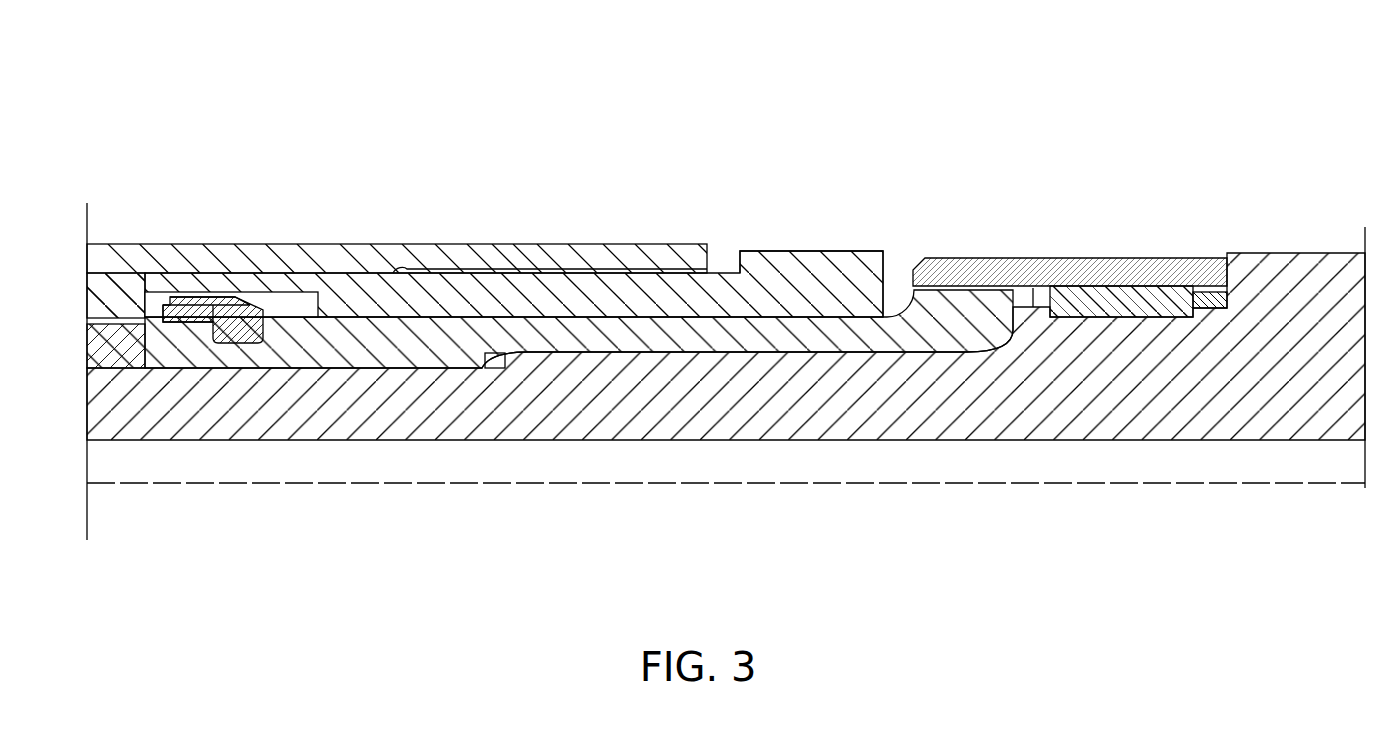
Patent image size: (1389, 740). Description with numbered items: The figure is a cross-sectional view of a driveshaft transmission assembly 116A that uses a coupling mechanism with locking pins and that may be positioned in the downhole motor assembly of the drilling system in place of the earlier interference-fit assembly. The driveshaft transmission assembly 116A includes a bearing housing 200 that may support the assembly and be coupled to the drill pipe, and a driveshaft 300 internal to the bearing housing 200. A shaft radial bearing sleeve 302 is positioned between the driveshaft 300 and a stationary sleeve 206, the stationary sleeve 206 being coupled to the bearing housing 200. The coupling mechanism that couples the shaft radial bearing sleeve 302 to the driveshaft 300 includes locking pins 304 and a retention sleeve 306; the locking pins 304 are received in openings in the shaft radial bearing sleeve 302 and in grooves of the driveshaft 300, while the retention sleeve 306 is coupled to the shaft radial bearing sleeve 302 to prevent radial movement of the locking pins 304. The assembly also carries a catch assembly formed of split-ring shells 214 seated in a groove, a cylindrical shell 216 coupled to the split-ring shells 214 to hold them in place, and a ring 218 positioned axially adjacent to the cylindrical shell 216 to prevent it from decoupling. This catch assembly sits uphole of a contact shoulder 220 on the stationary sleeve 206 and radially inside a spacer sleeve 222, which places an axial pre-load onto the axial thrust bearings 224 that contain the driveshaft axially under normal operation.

The driveshaft transmission assembly 116A is at (127, 105).
The bearing housing 200 is at (222, 258).
The stationary sleeve 206 is at (782, 273).
The split-ring shells 214 is at (257, 330).
The cylindrical shell 216 is at (222, 298).
The ring 218 is at (160, 313).
The contact shoulder 220 is at (318, 274).
The spacer sleeve 222 is at (180, 283).
The axial thrust bearings 224 is at (93, 291).
The driveshaft 300 is at (1000, 418).
The shaft radial bearing sleeve 302 is at (683, 337).
The locking pins 304 is at (1147, 290).
The retention sleeve 306 is at (1018, 270).